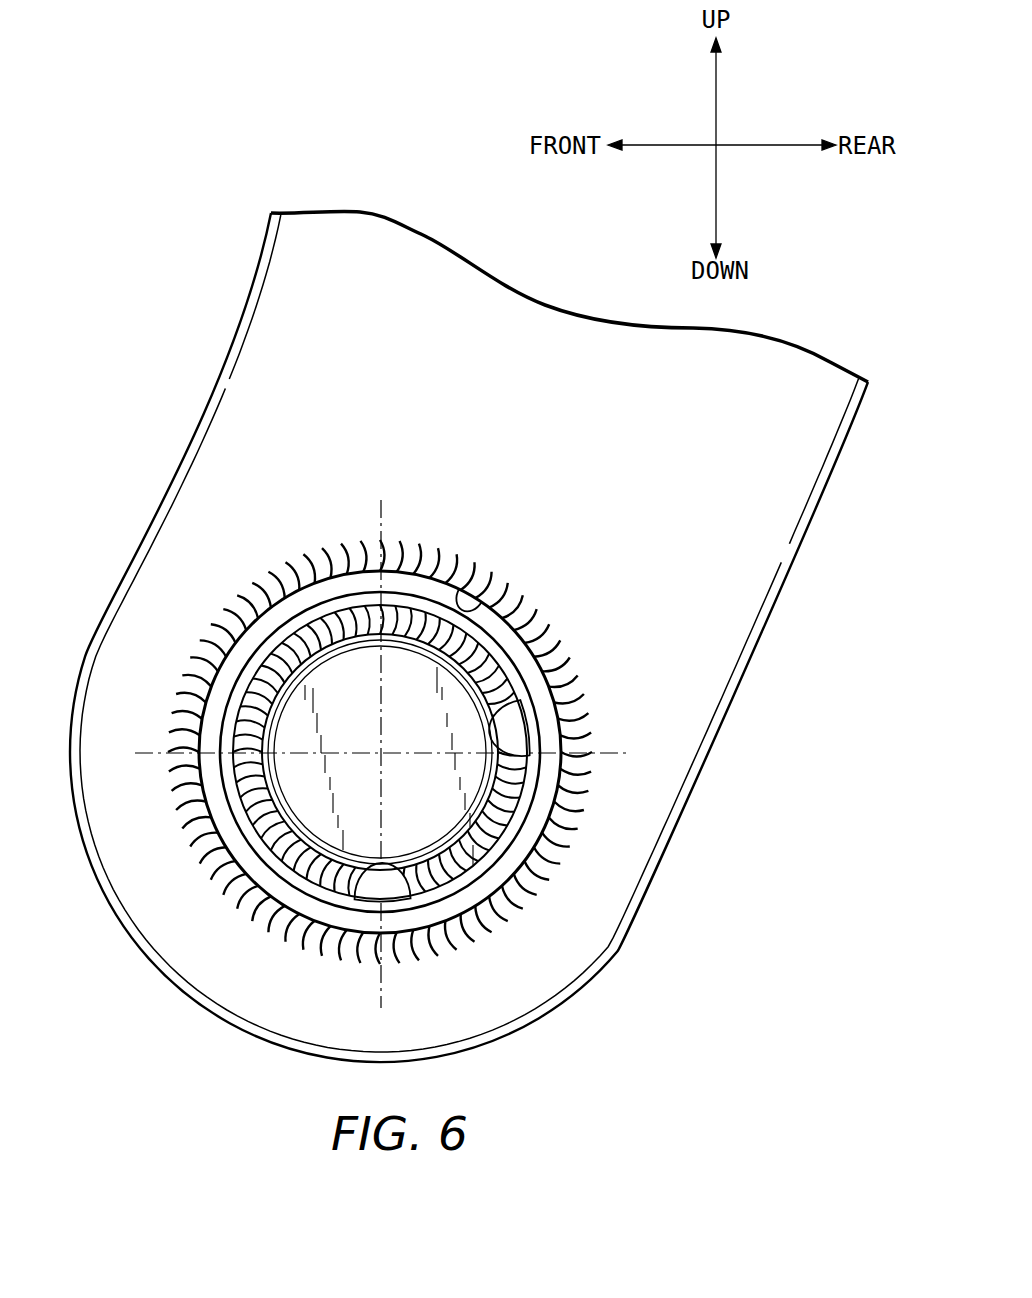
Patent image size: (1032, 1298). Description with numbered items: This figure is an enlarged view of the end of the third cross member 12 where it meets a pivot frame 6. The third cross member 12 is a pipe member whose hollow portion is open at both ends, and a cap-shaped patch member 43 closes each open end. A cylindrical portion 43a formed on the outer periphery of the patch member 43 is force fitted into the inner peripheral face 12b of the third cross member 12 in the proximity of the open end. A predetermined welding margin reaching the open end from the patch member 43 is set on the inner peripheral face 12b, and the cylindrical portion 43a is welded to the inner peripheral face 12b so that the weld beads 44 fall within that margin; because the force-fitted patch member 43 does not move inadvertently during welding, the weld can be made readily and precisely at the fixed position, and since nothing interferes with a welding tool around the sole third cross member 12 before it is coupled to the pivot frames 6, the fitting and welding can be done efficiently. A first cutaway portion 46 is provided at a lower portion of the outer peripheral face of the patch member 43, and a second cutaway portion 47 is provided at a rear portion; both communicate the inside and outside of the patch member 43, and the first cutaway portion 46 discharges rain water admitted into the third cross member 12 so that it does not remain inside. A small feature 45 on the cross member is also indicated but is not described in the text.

The pivot frame 6 is at (455, 273).
The third cross member 12 is at (404, 752).
The inner peripheral face 12b is at (336, 751).
The patch member 43 is at (380, 752).
The cylindrical portion 43a is at (380, 752).
The weld beads 44 is at (380, 752).
The positioning notch 45 is at (494, 566).
The first cutaway portion 46 is at (362, 933).
The second cutaway portion 47 is at (565, 731).